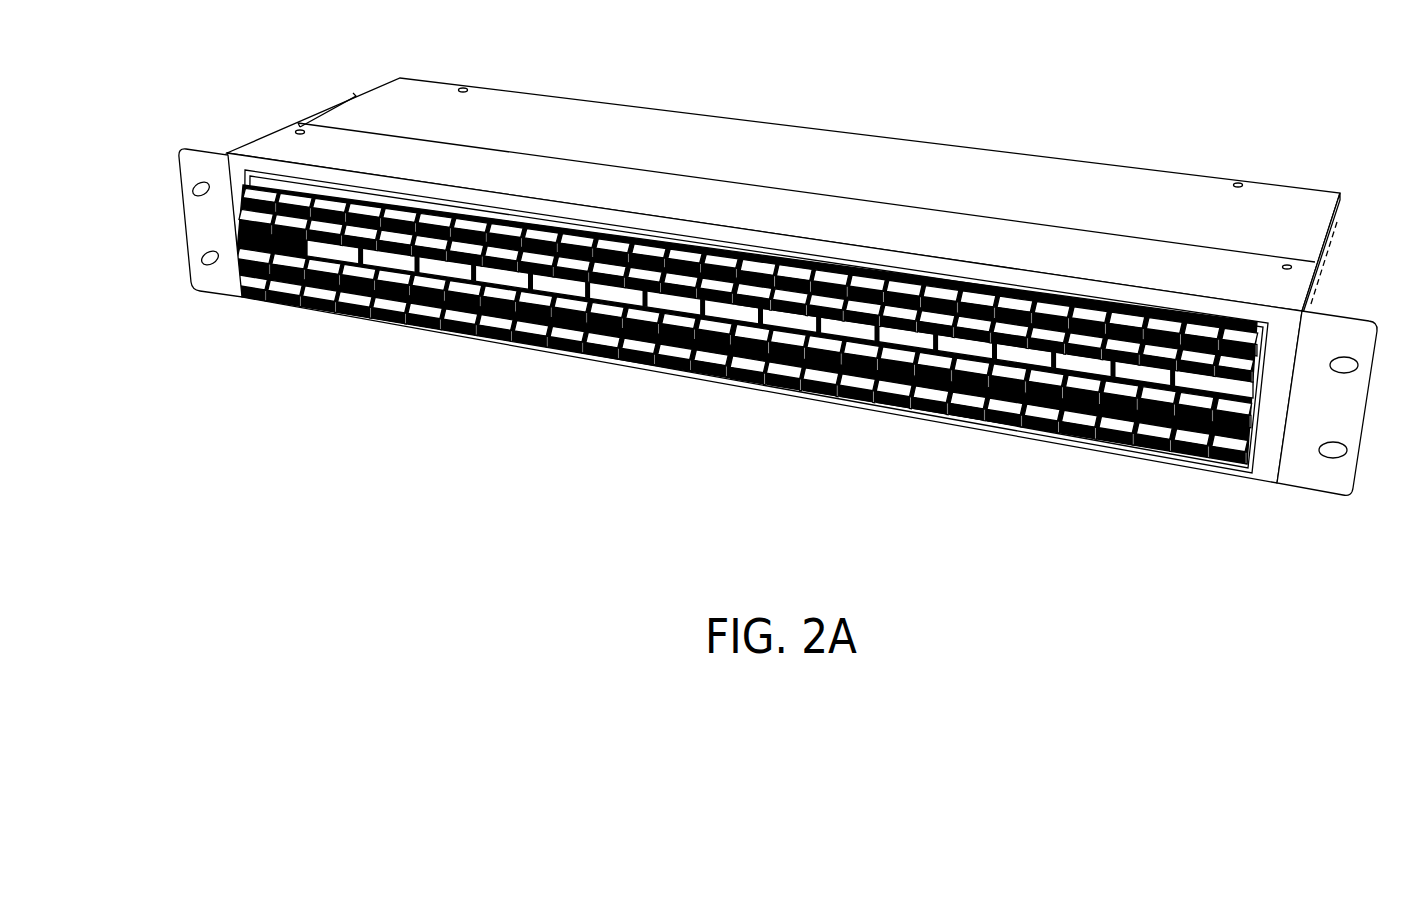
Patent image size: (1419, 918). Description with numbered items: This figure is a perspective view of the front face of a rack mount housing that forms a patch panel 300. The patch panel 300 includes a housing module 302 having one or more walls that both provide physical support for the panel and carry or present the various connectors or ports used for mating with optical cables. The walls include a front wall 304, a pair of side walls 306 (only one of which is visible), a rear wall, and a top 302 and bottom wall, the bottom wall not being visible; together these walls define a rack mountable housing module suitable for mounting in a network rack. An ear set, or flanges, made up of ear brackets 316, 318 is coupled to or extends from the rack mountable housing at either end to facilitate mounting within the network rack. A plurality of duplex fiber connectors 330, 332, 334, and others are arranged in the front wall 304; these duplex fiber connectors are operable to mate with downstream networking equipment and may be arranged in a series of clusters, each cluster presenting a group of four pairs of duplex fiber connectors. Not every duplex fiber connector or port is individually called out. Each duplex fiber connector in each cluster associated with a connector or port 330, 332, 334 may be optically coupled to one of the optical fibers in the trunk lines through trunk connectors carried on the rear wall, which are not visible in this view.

The patch panel 300 is at (212, 61).
The housing module 302 is at (398, 92).
The front wall 304 is at (1262, 465).
The side wall 306 is at (1338, 258).
The ear bracket 316 is at (192, 278).
The ear bracket 318 is at (1313, 472).
The duplex fiber connector 330 is at (1215, 483).
The duplex fiber connector 332 is at (1177, 475).
The duplex fiber connector 334 is at (1138, 467).